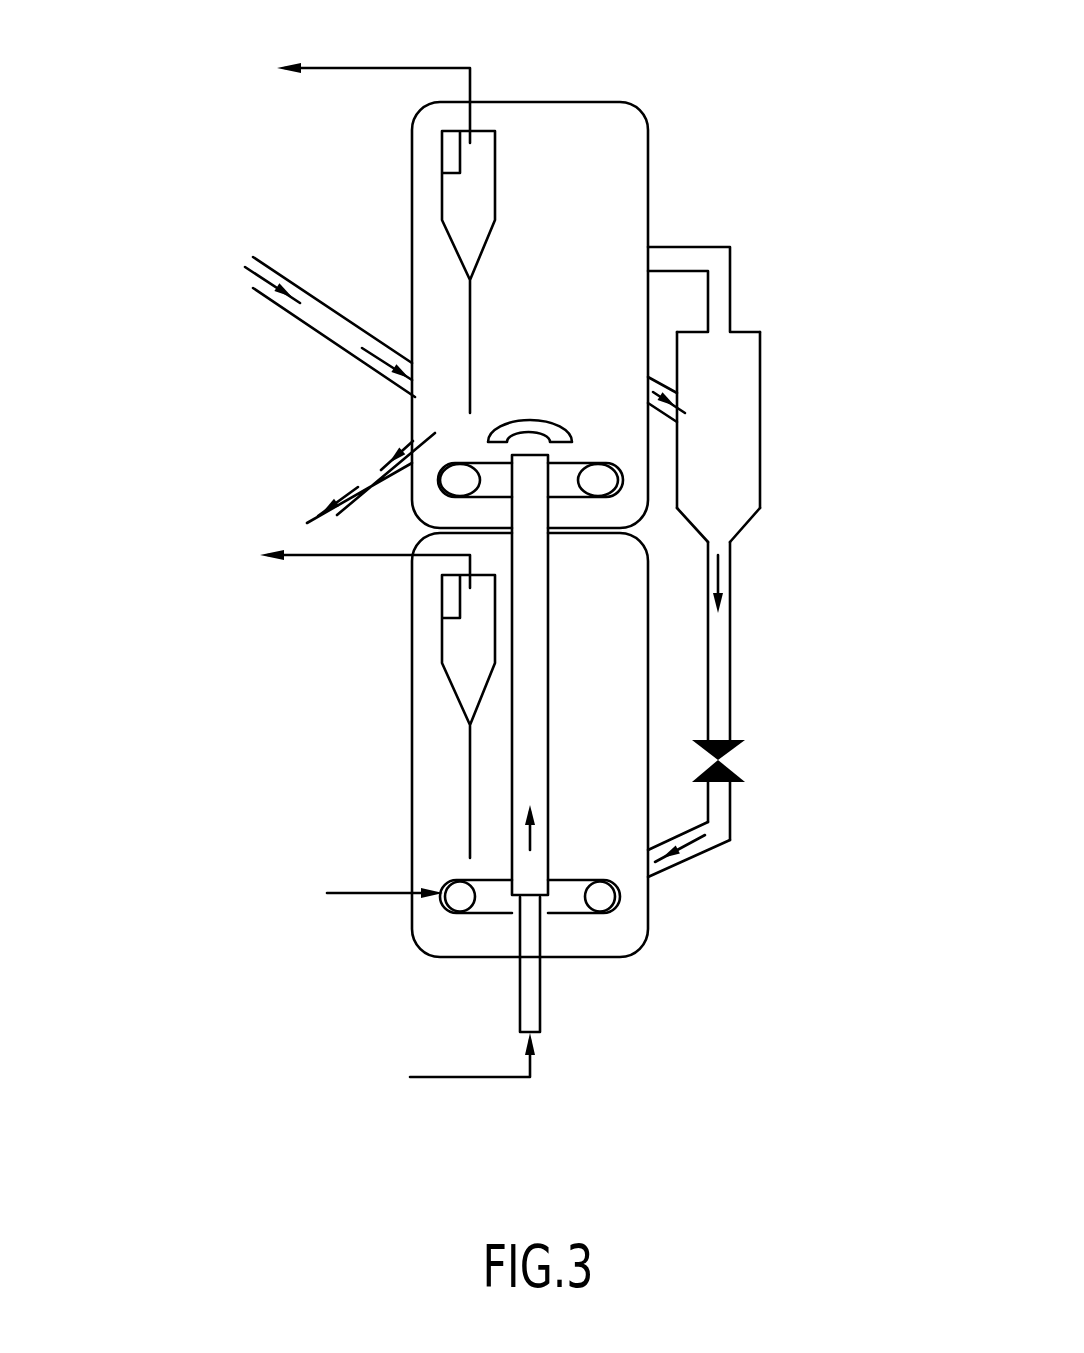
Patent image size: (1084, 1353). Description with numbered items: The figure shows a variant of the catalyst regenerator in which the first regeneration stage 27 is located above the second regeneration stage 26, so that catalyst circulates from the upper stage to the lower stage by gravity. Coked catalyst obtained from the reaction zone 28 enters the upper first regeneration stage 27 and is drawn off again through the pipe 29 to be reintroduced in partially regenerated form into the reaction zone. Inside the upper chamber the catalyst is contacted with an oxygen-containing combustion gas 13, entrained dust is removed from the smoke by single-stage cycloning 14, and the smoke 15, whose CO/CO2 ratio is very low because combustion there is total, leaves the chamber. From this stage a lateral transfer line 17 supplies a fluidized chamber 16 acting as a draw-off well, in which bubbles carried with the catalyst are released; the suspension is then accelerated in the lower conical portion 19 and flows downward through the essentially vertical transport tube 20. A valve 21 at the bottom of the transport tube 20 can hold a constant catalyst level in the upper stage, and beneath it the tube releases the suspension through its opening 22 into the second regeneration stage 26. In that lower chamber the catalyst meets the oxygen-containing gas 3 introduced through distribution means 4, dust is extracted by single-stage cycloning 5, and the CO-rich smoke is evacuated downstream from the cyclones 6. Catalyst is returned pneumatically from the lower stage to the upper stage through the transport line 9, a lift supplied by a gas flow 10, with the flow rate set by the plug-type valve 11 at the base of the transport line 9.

The gas 3 is at (357, 893).
The means 4 is at (495, 898).
The single-stage cycloning 5 is at (473, 640).
The cyclones 6 is at (313, 560).
The transport line 9 is at (530, 758).
The gas flow 10 is at (470, 1077).
The plug-type valve 11 is at (530, 900).
The combustion gas 13 is at (682, 545).
The single-stage cycloning 14 is at (475, 180).
The smoke 15 is at (337, 66).
The fluidized chamber 16 is at (740, 413).
The lateral transfer line 17 is at (655, 385).
The lower conical portion 19 is at (735, 515).
The transport tube 20 is at (725, 655).
The valve 21 is at (722, 760).
The opening 22 is at (702, 847).
The second regeneration stage 26 is at (413, 752).
The first regeneration stage 27 is at (413, 222).
The reaction zone 28 is at (317, 322).
The pipe 29 is at (360, 477).